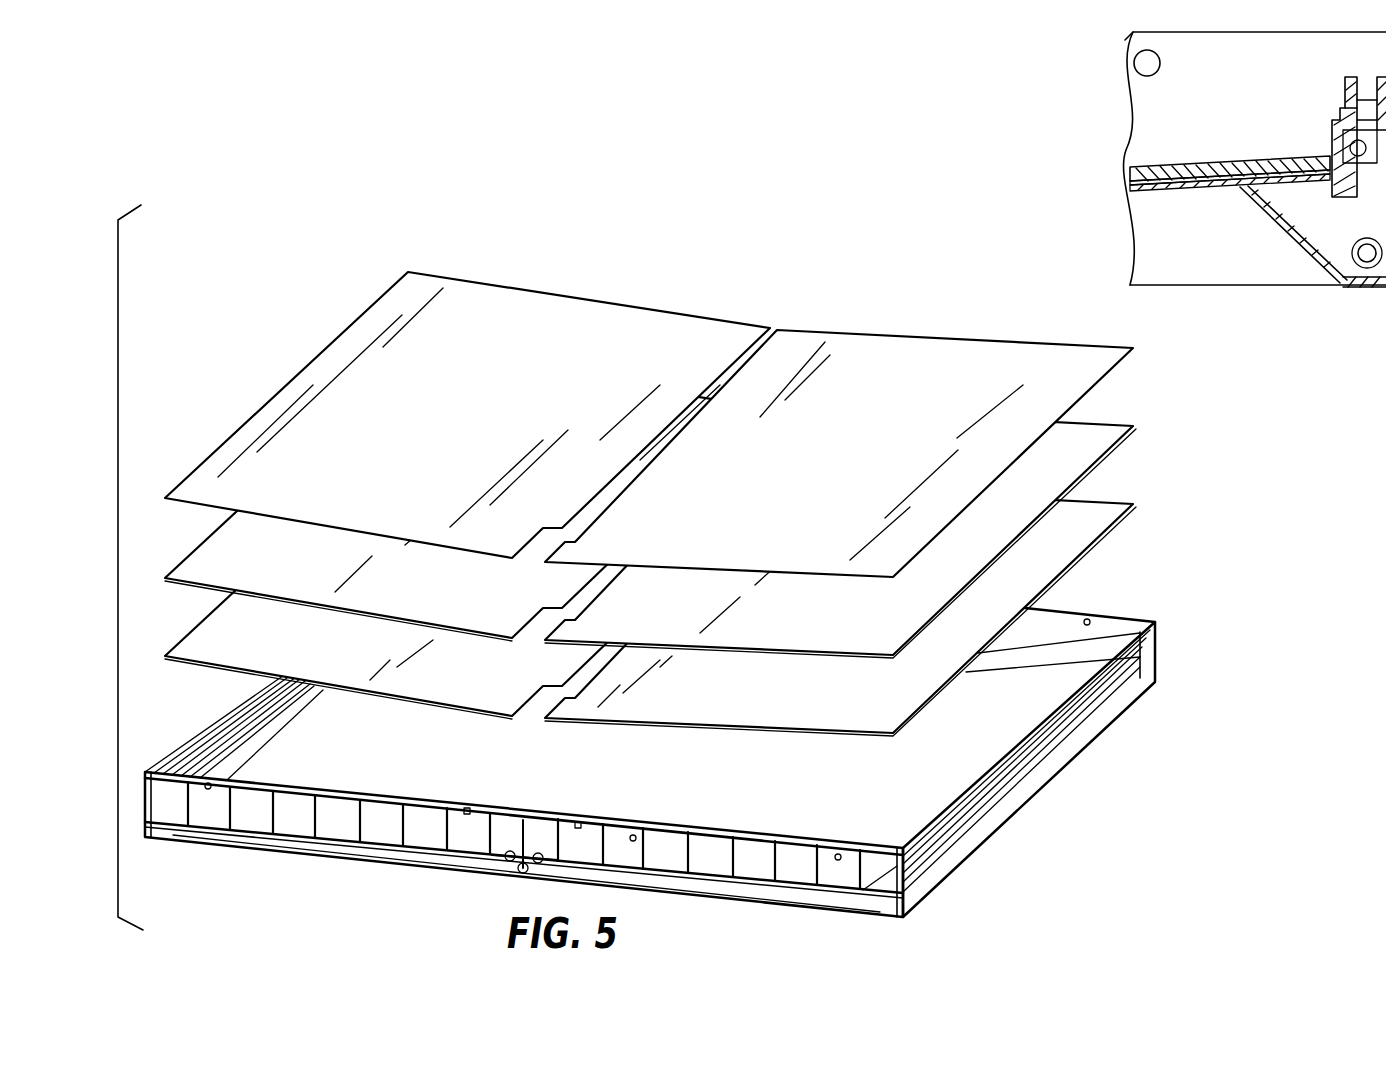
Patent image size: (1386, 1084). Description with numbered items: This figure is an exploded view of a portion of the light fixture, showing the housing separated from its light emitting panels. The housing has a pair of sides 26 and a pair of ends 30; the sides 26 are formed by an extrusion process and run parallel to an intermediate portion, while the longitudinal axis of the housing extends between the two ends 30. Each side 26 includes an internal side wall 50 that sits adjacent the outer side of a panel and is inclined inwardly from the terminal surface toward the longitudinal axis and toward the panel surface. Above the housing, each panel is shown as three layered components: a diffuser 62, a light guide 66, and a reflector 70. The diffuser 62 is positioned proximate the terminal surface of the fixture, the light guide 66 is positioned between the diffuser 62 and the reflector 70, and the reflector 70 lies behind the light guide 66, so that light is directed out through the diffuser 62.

The sides 26 is at (165, 750).
The ends 30 is at (373, 832).
The internal side wall 50 is at (1297, 247).
The diffuser 62 is at (187, 645).
The light guide 66 is at (193, 571).
The reflector 70 is at (200, 489).